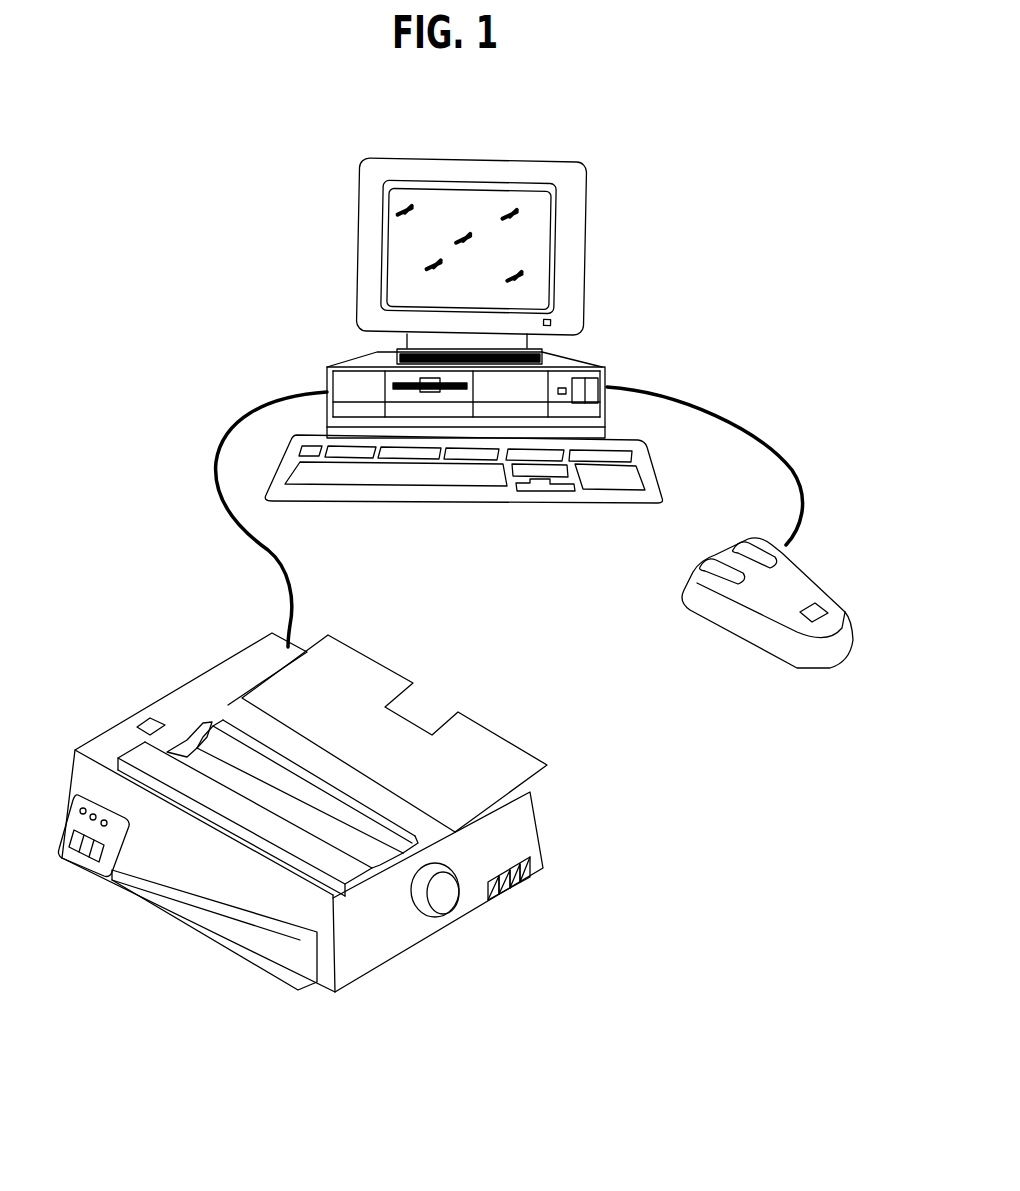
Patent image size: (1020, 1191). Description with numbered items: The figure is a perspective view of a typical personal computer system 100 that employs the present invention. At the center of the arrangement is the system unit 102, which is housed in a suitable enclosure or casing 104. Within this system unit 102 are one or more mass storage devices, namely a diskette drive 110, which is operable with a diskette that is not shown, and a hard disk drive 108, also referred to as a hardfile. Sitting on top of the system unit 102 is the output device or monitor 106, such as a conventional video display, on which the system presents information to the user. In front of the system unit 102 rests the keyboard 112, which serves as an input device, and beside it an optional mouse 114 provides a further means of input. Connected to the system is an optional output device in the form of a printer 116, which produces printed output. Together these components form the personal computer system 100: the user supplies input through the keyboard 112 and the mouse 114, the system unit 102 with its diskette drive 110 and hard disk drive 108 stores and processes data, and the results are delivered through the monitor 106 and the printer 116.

The personal computer system 100 is at (698, 726).
The system unit 102 is at (509, 460).
The enclosure or casing 104 is at (498, 355).
The monitor 106 is at (585, 212).
The hard disk drive 108 is at (520, 384).
The diskette drive 110 is at (393, 385).
The keyboard 112 is at (513, 503).
The mouse 114 is at (813, 575).
The printer 116 is at (507, 738).